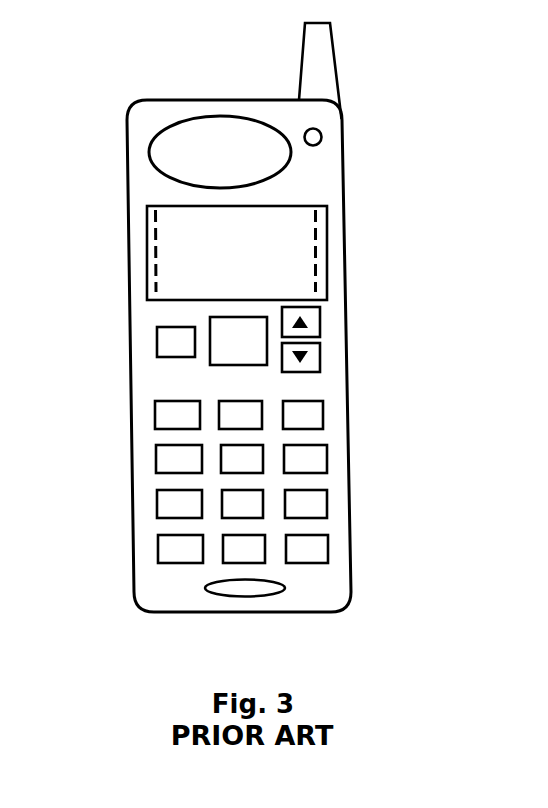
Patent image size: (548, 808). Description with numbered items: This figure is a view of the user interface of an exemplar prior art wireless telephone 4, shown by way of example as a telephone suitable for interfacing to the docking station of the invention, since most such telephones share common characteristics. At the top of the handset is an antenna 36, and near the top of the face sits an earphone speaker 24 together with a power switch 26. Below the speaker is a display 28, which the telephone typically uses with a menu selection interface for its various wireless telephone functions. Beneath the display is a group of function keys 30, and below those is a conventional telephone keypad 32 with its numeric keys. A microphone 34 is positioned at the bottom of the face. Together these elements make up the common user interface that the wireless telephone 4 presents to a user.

The wireless telephone 4 is at (348, 407).
The earphone speaker 24 is at (148, 146).
The power switch 26 is at (322, 128).
The display 28 is at (145, 267).
The group of function keys 30 is at (145, 315).
The conventional telephone keypad 32 is at (153, 568).
The microphone 34 is at (207, 582).
The antenna 36 is at (337, 60).